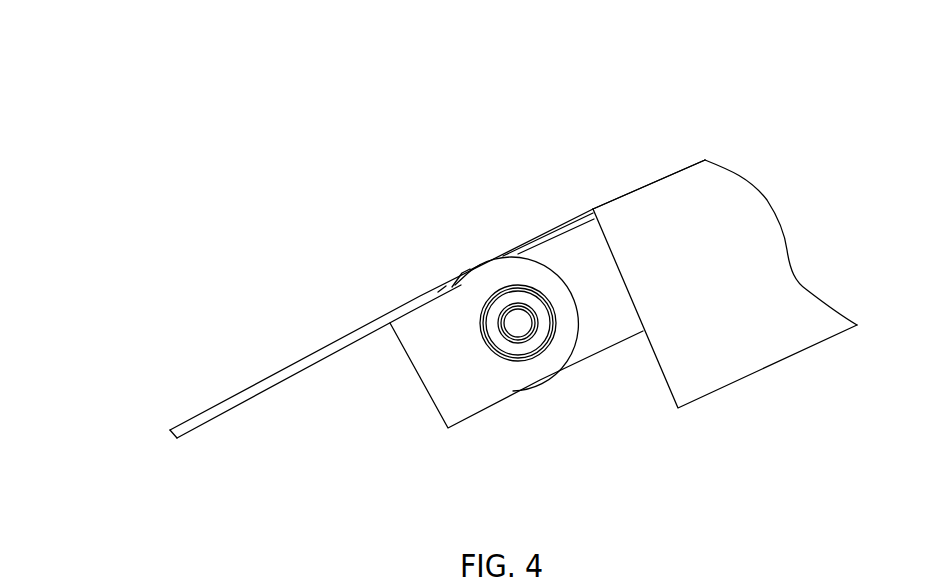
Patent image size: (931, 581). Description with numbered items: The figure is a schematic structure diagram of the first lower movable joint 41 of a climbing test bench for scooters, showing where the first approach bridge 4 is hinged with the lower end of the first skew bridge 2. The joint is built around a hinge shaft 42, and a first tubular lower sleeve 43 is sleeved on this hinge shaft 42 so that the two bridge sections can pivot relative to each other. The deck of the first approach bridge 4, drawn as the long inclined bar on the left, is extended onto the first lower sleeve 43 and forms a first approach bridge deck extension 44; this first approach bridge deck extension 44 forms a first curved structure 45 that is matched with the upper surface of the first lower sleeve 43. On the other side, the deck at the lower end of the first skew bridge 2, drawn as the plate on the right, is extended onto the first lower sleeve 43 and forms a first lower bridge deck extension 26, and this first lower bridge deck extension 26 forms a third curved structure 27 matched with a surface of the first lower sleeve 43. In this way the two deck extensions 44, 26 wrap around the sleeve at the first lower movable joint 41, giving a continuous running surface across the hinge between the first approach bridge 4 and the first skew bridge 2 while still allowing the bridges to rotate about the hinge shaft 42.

The first skew bridge 2 is at (690, 312).
The first approach bridge 4 is at (317, 360).
The first lower bridge deck extension 26 is at (552, 228).
The third curved structure 27 is at (507, 247).
The first lower movable joint 41 is at (607, 310).
The hinge shaft 42 is at (490, 343).
The first tubular lower sleeve 43 is at (474, 272).
The first approach bridge deck extension 44 is at (443, 289).
The first curved structure 45 is at (453, 275).